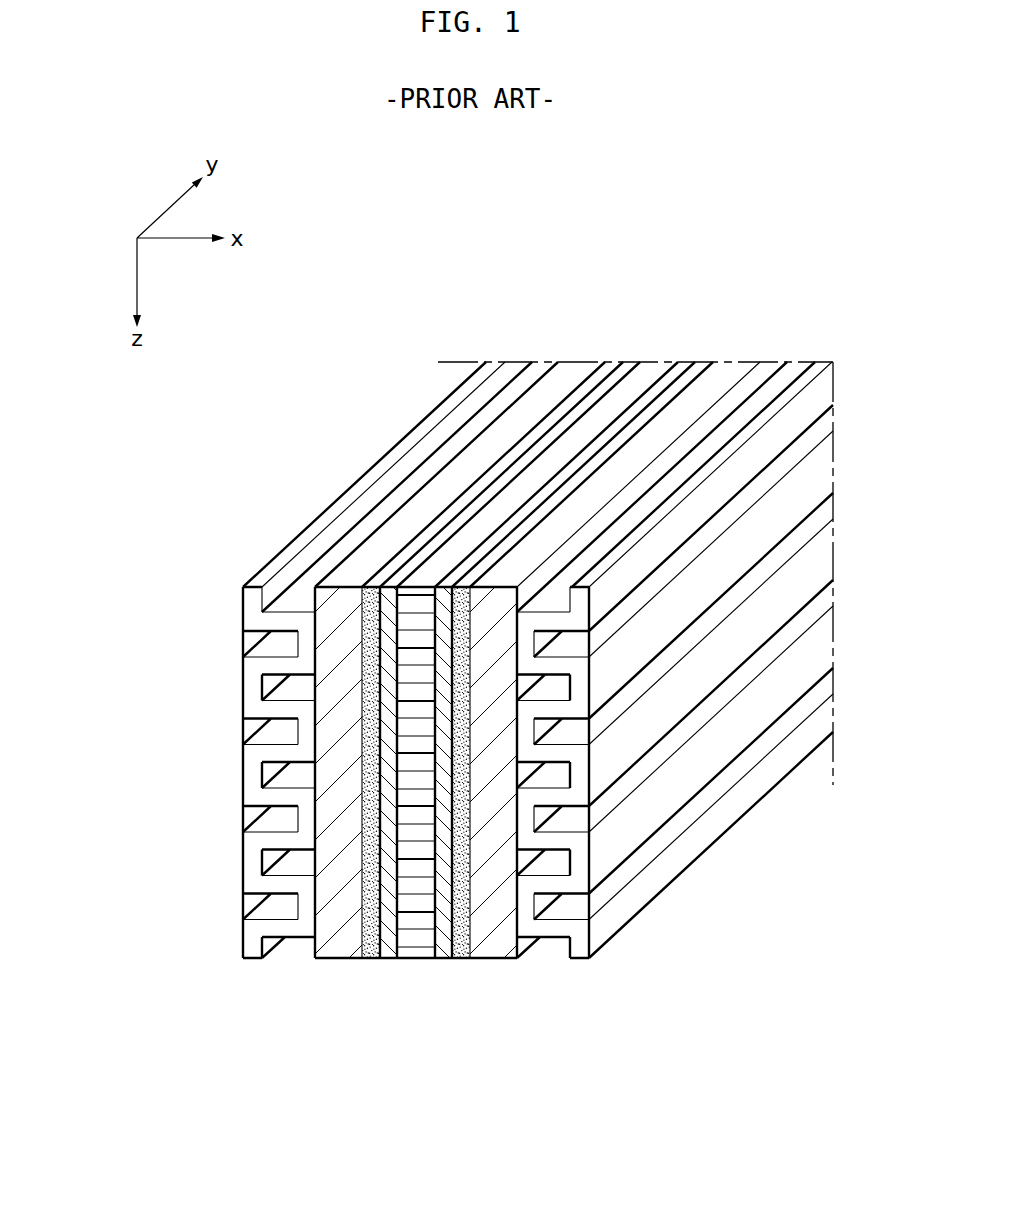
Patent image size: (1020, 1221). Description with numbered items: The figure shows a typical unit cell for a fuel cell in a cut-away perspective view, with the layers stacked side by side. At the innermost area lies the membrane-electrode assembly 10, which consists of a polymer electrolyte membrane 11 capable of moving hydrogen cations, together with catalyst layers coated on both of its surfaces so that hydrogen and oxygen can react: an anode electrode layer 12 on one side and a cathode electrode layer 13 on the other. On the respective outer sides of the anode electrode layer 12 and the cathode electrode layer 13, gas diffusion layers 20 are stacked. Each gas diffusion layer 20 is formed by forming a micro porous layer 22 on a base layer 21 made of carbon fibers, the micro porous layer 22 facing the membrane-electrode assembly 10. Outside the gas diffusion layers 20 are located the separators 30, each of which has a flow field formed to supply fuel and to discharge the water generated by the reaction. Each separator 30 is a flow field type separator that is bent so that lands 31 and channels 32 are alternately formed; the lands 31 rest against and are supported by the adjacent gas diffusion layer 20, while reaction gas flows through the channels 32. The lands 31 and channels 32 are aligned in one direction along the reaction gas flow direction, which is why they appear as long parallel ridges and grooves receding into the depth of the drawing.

The membrane-electrode assembly 10 is at (410, 892).
The polymer electrolyte membrane 11 is at (417, 950).
The anode electrode layer 12 is at (393, 958).
The cathode electrode layer 13 is at (443, 958).
The gas diffusion layer 20 is at (418, 857).
The base layer 21 is at (335, 940).
The micro porous layer 22 is at (369, 958).
The separator 30 is at (460, 782).
The land 31 is at (310, 813).
The channel 32 is at (293, 773).